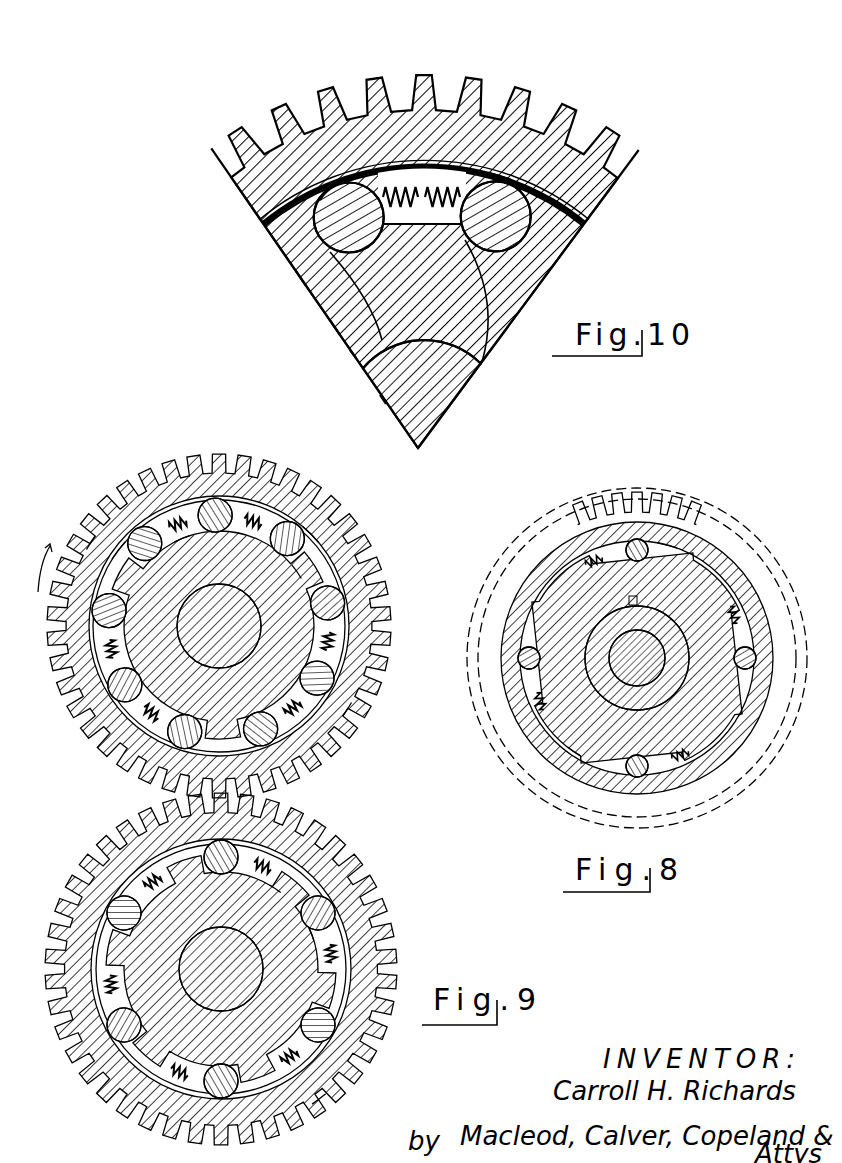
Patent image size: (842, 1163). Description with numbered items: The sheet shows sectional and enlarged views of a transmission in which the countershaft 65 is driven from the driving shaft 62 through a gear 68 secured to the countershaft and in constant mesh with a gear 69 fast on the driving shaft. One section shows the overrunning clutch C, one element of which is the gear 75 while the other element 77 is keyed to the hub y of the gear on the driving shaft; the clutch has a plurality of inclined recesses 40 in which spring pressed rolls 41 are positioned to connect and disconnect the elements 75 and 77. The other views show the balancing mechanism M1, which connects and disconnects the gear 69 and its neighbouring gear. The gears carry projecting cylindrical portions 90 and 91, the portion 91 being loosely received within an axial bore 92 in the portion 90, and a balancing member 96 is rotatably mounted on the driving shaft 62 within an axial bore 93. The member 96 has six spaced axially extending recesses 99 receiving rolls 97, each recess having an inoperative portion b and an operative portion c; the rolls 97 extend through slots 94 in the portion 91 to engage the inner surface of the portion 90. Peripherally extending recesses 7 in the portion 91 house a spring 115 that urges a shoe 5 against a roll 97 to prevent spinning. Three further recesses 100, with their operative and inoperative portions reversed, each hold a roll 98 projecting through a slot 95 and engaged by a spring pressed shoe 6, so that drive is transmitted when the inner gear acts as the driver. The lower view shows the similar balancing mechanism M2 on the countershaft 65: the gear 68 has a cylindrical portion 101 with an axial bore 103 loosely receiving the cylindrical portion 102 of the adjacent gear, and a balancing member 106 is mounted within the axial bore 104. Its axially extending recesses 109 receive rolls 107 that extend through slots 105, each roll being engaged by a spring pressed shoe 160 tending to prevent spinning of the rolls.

In FIG. 10, the shoe 5 is at (500, 200).
In FIG. 10, the spring pressed shoe 6 is at (347, 200).
In FIG. 9, the spring pressed shoe 6 is at (208, 528).
In FIG. 10, the peripherally extending recesses 7 is at (450, 182).
In FIG. 10, the spring 115 is at (437, 182).
In FIG. 8, the inclined recesses 40 is at (590, 553).
In FIG. 8, the spring pressed rolls 41 is at (650, 540).
In FIG. 10, the driving shaft 62 is at (417, 393).
In FIG. 9, the driving shaft 62 is at (205, 645).
In FIG. 8, the driving shaft 62 is at (620, 697).
In FIG. 9, the countershaft 65 is at (203, 990).
In FIG. 9, the gear 68 is at (95, 862).
In FIG. 10, the gear 69 is at (258, 193).
In FIG. 9, the gear 69 is at (86, 540).
In FIG. 8, the gear 75 is at (573, 505).
In FIG. 8, the clutch element 77 is at (693, 593).
In FIG. 10, the cylindrical portion 90 is at (305, 110).
In FIG. 9, the cylindrical portion 90 is at (152, 478).
In FIG. 10, the cylindrical portion 91 is at (565, 238).
In FIG. 9, the cylindrical portion 91 is at (358, 575).
In FIG. 10, the axial bore 92 is at (580, 212).
In FIG. 9, the axial bore 92 is at (348, 560).
In FIG. 10, the axial bore 93 is at (553, 265).
In FIG. 9, the axial bore 93 is at (312, 537).
In FIG. 10, the slots 94 is at (568, 213).
In FIG. 9, the slots 94 is at (183, 505).
In FIG. 10, the slot 95 is at (292, 246).
In FIG. 9, the slot 95 is at (126, 557).
In FIG. 10, the balancing member 96 is at (368, 365).
In FIG. 9, the balancing member 96 is at (275, 668).
In FIG. 10, the rolls 97 is at (522, 172).
In FIG. 9, the rolls 97 is at (268, 513).
In FIG. 10, the roll 98 is at (332, 190).
In FIG. 9, the roll 98 is at (138, 538).
In FIG. 10, the recesses 99 is at (500, 262).
In FIG. 9, the recesses 99 is at (290, 565).
In FIG. 10, the recesses 100 is at (335, 280).
In FIG. 9, the recesses 100 is at (182, 540).
In FIG. 9, the cylindrical portion 101 is at (333, 1030).
In FIG. 9, the cylindrical portion 102 is at (330, 1005).
In FIG. 9, the axial bore 103 is at (135, 1072).
In FIG. 9, the axial bore 104 is at (118, 1062).
In FIG. 9, the slot 105 is at (318, 880).
In FIG. 9, the balancing member 106 is at (303, 977).
In FIG. 9, the roll 107 is at (315, 900).
In FIG. 9, the recesses 109 is at (300, 858).
In FIG. 9, the spring pressed shoe 160 is at (325, 925).
In FIG. 10, the balancing mechanism M1 is at (342, 350).
In FIG. 9, the balancing mechanism M1 is at (333, 712).
In FIG. 9, the balancing mechanism M2 is at (307, 1090).
In FIG. 8, the overrunning clutch C is at (633, 543).
In FIG. 8, the key a is at (633, 609).
In FIG. 8, the hub y is at (583, 712).
In FIG. 10, the inoperative portion b is at (345, 310).
In FIG. 9, the inoperative portion b is at (300, 935).
In FIG. 10, the operative portion c is at (300, 280).
In FIG. 9, the operative portion c is at (270, 895).